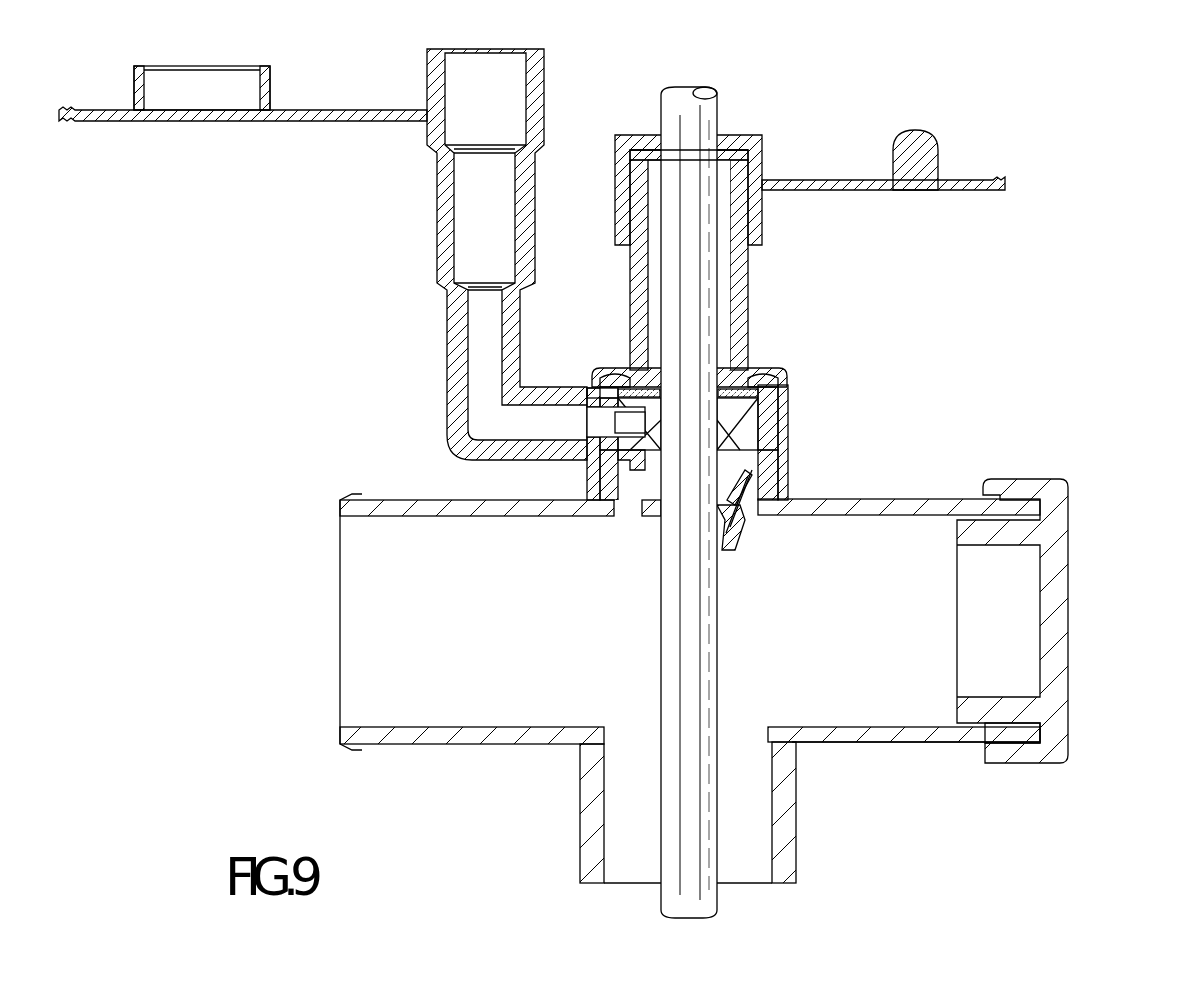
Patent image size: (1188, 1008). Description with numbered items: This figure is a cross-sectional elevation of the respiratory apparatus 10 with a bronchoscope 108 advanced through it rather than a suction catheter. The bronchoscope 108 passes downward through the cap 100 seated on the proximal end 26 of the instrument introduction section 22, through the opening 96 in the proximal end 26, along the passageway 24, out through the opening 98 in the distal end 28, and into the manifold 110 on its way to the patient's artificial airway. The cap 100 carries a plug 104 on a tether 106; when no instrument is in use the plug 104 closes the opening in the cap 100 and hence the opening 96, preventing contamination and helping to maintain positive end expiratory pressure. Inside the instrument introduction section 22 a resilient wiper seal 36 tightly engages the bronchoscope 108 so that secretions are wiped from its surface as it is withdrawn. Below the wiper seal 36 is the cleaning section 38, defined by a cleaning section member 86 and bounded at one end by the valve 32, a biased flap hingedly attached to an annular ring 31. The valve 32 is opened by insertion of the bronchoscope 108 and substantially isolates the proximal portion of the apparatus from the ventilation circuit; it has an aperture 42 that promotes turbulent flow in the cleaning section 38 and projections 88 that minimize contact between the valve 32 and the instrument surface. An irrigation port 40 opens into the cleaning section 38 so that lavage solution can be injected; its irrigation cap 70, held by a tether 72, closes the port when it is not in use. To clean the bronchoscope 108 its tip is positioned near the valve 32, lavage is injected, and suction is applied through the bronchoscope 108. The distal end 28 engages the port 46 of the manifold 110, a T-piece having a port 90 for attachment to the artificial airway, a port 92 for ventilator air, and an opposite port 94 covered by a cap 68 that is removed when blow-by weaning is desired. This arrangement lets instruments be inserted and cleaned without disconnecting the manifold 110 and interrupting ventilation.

The respiratory apparatus 10 is at (222, 368).
The instrument introduction section 22 is at (775, 383).
The passageway 24 is at (722, 326).
The proximal end 26 is at (745, 264).
The distal end 28 is at (612, 492).
The annular ring 31 is at (772, 433).
The valve 32 is at (737, 527).
The wiper seal 36 is at (652, 378).
The cleaning section 38 is at (757, 395).
The irrigation port 40 is at (438, 220).
The aperture 42 is at (743, 542).
The port 46 is at (790, 482).
The cap 68 is at (1060, 692).
The irrigation cap 70 is at (190, 122).
The tether 72 is at (318, 123).
The cleaning section member 86 is at (612, 430).
The projection 88 is at (738, 533).
The port 90 is at (800, 848).
The port 92 is at (395, 741).
The port 94 is at (1015, 741).
The opening 96 is at (653, 172).
The opening 98 is at (633, 505).
The cap 100 is at (620, 170).
The plug 104 is at (921, 134).
The tether 106 is at (815, 184).
The bronchoscope 108 is at (668, 835).
The manifold 110 is at (857, 741).